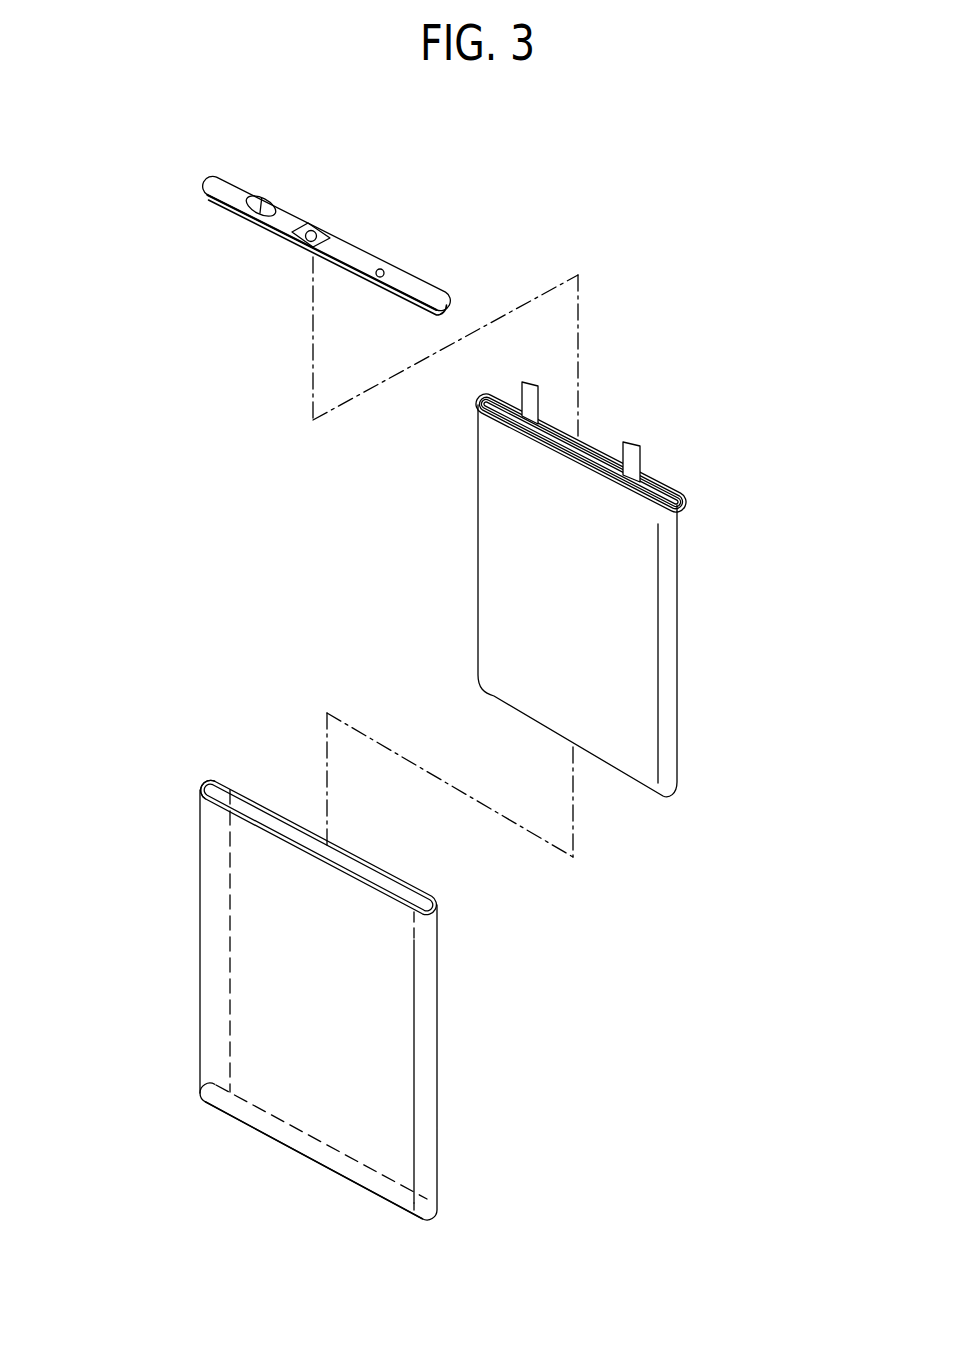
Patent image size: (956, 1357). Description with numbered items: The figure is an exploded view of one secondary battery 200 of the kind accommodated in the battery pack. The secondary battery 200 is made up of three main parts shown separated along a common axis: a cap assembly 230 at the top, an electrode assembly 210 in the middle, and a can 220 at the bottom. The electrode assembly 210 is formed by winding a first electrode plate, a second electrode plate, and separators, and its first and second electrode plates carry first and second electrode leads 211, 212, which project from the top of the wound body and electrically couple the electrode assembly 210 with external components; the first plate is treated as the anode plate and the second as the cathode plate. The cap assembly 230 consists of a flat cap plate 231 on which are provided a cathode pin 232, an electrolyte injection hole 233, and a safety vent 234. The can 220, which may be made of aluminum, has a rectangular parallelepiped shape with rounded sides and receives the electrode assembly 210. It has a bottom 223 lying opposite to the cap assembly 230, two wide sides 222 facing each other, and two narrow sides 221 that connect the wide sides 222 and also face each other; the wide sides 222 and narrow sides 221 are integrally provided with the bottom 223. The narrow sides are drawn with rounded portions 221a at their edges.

The secondary battery 200 is at (678, 227).
The electrode assembly 210 is at (686, 630).
The first electrode lead 211 is at (530, 398).
The second electrode lead 212 is at (633, 458).
The can 220 is at (441, 1080).
The narrow side 221 is at (422, 992).
The rounded portion 221a is at (208, 782).
The wide side 222 is at (250, 996).
The bottom 223 is at (291, 1140).
The cap assembly 230 is at (200, 174).
The cap plate 231 is at (355, 258).
The cathode pin 232 is at (316, 225).
The electrolyte injection hole 233 is at (386, 274).
The safety vent 234 is at (262, 200).